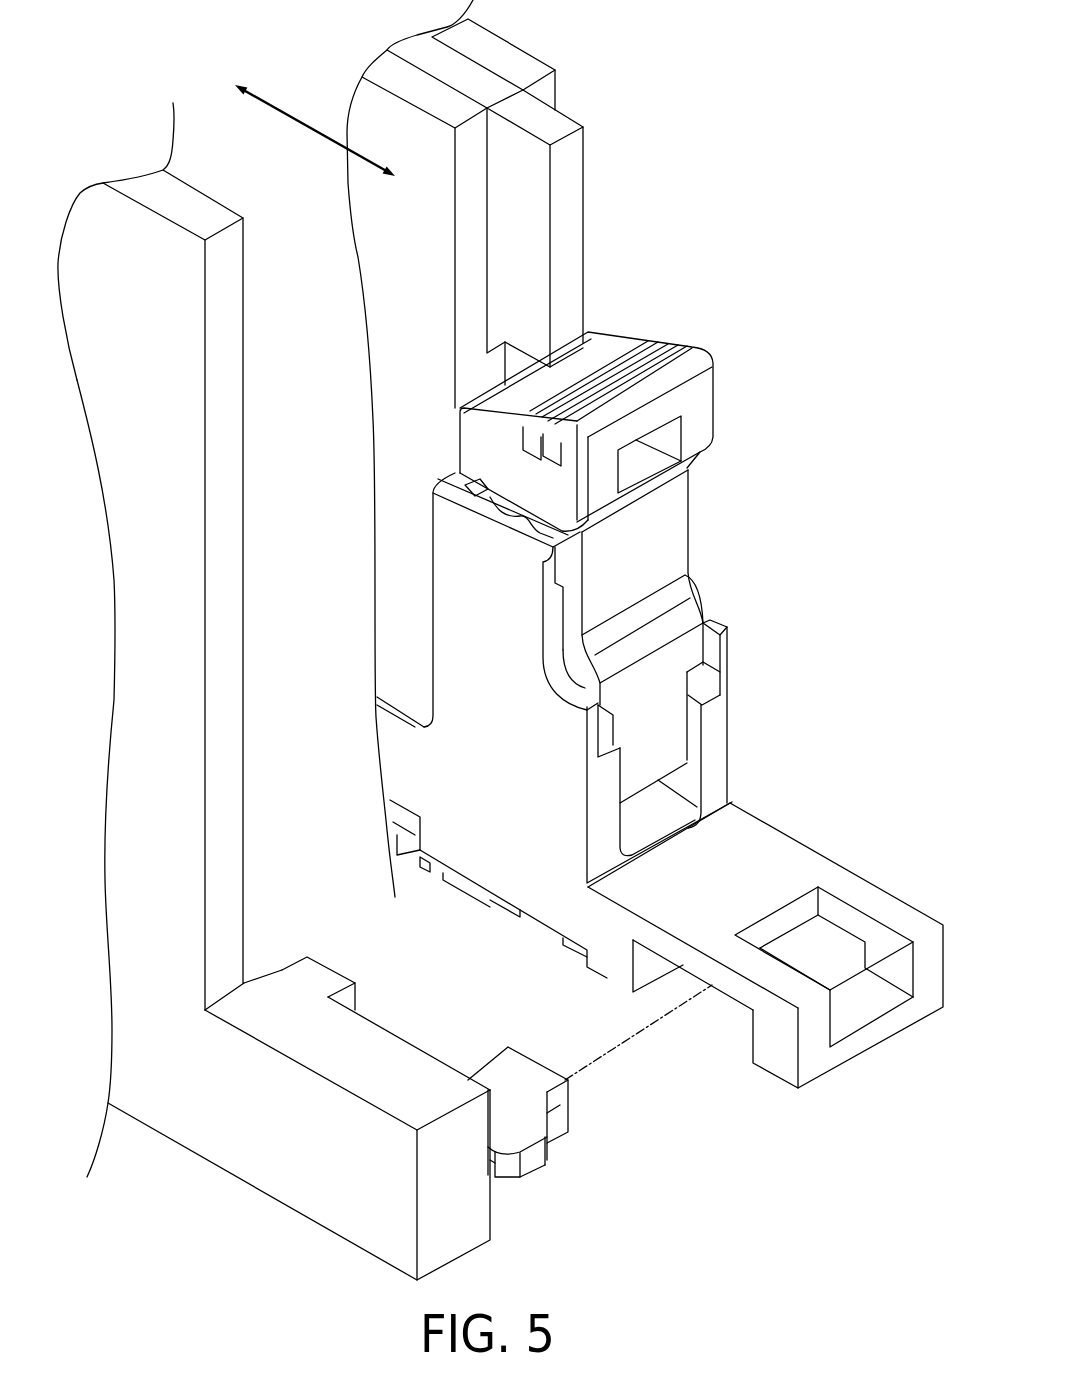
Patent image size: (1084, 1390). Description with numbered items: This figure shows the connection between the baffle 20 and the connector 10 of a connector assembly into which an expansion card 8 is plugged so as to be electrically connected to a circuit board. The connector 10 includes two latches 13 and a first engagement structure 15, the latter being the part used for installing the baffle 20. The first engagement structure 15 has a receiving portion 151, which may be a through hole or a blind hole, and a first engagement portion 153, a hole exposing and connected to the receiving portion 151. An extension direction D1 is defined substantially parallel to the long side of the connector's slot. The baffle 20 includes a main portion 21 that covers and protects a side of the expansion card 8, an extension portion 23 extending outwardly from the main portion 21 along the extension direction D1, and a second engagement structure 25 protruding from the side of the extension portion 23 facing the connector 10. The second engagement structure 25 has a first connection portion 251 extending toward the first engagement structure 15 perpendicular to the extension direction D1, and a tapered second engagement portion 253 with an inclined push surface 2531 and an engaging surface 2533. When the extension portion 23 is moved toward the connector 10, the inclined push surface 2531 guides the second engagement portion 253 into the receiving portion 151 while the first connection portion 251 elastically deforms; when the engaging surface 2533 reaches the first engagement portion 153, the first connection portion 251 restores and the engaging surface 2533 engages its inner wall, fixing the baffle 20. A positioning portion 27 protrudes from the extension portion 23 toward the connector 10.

The expansion card 8 is at (428, 198).
The connector 10 is at (712, 521).
The latch 13 is at (705, 410).
The first engagement structure 15 is at (754, 909).
The receiving portion 151 is at (676, 995).
The first engagement portion 153 is at (848, 944).
The baffle 20 is at (91, 181).
The main portion 21 is at (140, 667).
The extension portion 23 is at (277, 1226).
The second engagement structure 25 is at (640, 1157).
The first connection portion 251 is at (518, 1072).
The second engagement portion 253 is at (616, 1189).
The inclined push surface 2531 is at (547, 1113).
The engaging surface 2533 is at (490, 1160).
The positioning portion 27 is at (325, 945).
The extension direction D1 is at (315, 130).